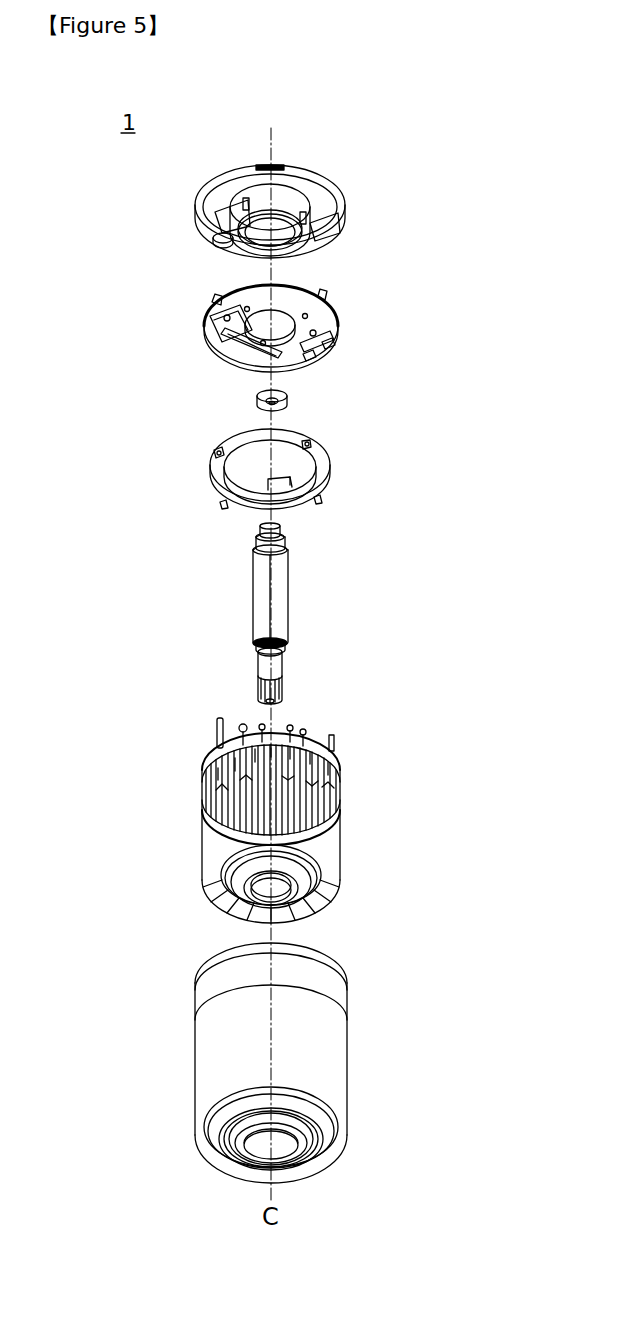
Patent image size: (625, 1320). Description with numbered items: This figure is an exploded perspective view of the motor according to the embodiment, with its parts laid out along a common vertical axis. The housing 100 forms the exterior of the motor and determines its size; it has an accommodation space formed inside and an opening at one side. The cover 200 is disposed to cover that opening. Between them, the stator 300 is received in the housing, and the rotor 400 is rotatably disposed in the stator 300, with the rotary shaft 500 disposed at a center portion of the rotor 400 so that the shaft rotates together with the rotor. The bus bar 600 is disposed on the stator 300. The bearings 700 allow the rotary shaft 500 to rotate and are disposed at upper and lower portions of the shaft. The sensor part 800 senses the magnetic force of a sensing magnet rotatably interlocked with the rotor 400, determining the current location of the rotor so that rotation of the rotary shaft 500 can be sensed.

The housing 100 is at (357, 955).
The cover 200 is at (338, 177).
The stator 300 is at (365, 745).
The rotor 400 is at (282, 608).
The rotary shaft 500 is at (275, 663).
The bus bar 600 is at (337, 452).
The bearings 700 is at (292, 398).
The sensor part 800 is at (348, 297).